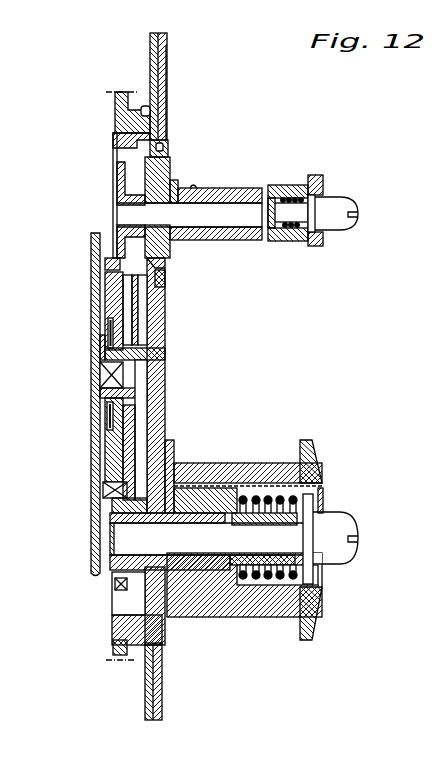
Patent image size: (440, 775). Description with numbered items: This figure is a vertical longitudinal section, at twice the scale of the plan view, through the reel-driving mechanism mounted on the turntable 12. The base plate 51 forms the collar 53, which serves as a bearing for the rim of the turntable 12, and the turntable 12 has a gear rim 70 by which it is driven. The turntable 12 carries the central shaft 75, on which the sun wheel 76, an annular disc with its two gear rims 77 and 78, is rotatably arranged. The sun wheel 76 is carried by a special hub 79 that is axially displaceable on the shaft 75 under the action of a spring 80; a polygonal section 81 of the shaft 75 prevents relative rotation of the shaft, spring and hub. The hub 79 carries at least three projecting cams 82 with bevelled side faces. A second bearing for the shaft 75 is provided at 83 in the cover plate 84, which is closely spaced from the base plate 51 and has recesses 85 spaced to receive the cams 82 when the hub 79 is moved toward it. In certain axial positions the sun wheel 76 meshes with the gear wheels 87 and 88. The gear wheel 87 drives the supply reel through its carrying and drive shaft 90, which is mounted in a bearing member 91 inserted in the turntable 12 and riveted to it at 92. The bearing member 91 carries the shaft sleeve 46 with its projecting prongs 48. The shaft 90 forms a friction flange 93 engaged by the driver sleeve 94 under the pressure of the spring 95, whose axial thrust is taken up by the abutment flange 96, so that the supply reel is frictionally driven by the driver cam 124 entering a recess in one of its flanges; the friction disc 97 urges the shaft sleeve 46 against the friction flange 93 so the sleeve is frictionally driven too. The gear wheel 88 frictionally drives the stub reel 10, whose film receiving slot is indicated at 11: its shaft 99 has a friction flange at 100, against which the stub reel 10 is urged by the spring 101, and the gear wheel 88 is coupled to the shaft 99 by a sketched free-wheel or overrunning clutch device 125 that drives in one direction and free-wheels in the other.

The stub reel 10 is at (210, 614).
The film receiving slot 11 is at (323, 487).
The turntable 12 is at (168, 52).
The shaft sleeve 46 is at (245, 240).
The projecting prongs 48 is at (222, 190).
The base plate 51 is at (150, 63).
The collar 53 is at (143, 115).
The gear rim 70 is at (118, 120).
The central shaft 75 is at (160, 383).
The sun wheel 76 is at (123, 307).
The gear rim 77 is at (112, 262).
The gear rim 78 is at (105, 282).
The hub 79 is at (165, 353).
The spring 80 is at (175, 540).
The polygonal section 81 is at (95, 392).
The cams 82 is at (110, 400).
The second bearing 83 is at (95, 378).
The cover plate 84 is at (91, 268).
The recesses 85 is at (94, 357).
The gear wheel 87 is at (119, 175).
The gear wheel 88 is at (120, 585).
The carrying and drive shaft 90 is at (235, 212).
The bearing member 91 is at (158, 177).
The rivet 92 is at (170, 148).
The friction flange 93 is at (271, 241).
The driver sleeve 94 is at (291, 196).
The spring 95 is at (294, 241).
The abutment flange 96 is at (313, 210).
The friction disc 97 is at (165, 262).
The shaft 99 is at (210, 462).
The friction flange 100 is at (242, 492).
The spring 101 is at (245, 582).
The driver cam 124 is at (321, 176).
The free-wheel or overrunning clutch device 125 is at (120, 512).